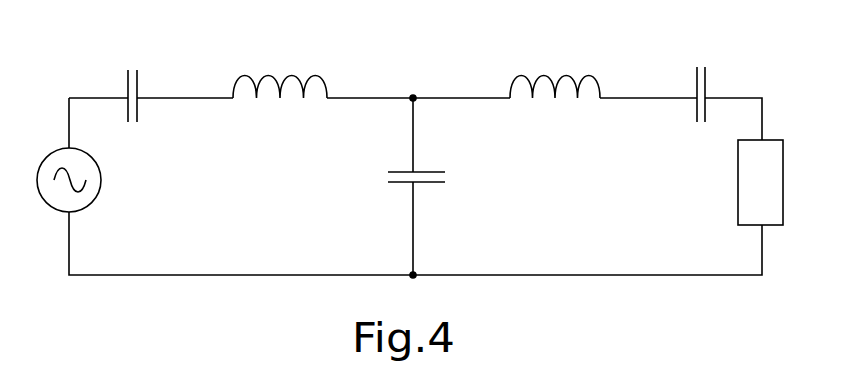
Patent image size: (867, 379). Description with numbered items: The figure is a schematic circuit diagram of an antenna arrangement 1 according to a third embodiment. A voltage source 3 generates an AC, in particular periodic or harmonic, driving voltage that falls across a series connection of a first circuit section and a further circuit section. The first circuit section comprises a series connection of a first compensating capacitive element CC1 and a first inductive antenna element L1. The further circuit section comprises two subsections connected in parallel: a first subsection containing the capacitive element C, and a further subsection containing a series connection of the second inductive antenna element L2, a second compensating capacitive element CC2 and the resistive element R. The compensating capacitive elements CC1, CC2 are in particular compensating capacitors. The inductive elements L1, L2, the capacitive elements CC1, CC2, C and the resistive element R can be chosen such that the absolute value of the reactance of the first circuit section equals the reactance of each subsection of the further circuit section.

The antenna arrangement 1 is at (212, 290).
The voltage source 3 is at (53, 205).
The first compensating capacitive element CC1 is at (140, 77).
The second compensating capacitive element CC2 is at (707, 73).
The first inductive antenna element L1 is at (310, 70).
The second inductive antenna element L2 is at (590, 70).
The capacitive element C is at (427, 198).
The resistive element R is at (782, 185).